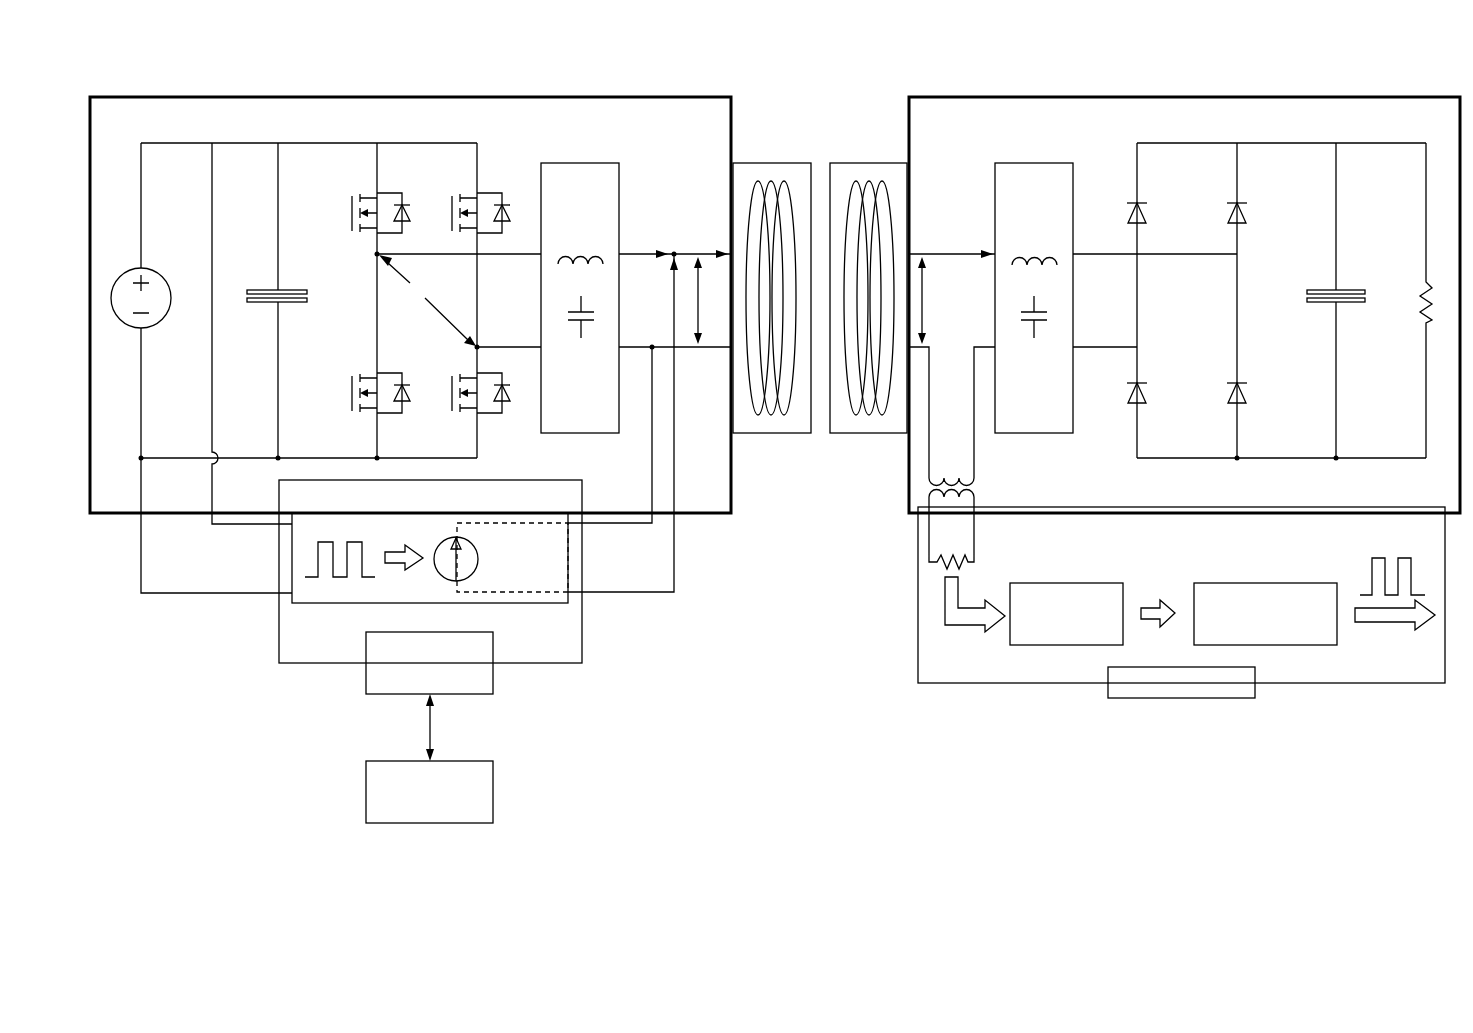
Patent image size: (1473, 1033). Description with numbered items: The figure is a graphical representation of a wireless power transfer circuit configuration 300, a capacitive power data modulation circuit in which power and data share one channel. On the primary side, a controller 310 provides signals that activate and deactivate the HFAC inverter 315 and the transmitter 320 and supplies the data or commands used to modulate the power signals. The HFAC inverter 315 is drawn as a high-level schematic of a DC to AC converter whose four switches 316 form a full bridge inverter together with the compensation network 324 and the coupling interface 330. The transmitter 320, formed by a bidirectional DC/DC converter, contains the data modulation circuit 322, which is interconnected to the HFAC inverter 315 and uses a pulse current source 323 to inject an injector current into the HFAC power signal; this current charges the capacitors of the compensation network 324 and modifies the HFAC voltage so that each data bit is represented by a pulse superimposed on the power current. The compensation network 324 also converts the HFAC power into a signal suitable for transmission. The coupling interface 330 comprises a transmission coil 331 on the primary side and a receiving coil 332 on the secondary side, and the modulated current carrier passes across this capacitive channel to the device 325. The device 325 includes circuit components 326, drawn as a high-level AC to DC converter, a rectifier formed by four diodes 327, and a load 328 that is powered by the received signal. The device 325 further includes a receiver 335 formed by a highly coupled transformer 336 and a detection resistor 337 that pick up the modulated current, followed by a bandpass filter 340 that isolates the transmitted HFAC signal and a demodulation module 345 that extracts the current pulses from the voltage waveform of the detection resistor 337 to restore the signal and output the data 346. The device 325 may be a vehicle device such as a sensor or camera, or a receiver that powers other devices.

The circuit configuration 300 is at (184, 76).
The controller 310 is at (493, 793).
The HFAC inverter 315 is at (412, 97).
The switches 316 is at (440, 182).
The transmitter 320 is at (279, 636).
The data modulation circuit 322 is at (568, 557).
The pulse current source 323 is at (478, 559).
The compensation network 324 is at (580, 163).
The device 325 is at (1002, 76).
The circuit components 326 is at (982, 198).
The diodes 327 is at (1250, 186).
The load 328 is at (1420, 294).
The coupling interface 330 is at (800, 76).
The coil 331 is at (774, 163).
The coil 332 is at (870, 163).
The receiver 335 is at (918, 634).
The transformer 336 is at (929, 455).
The detection resistor 337 is at (929, 545).
The bandpass filter 340 is at (1067, 583).
The demodulation module 345 is at (1265, 583).
The data 346 is at (1405, 629).